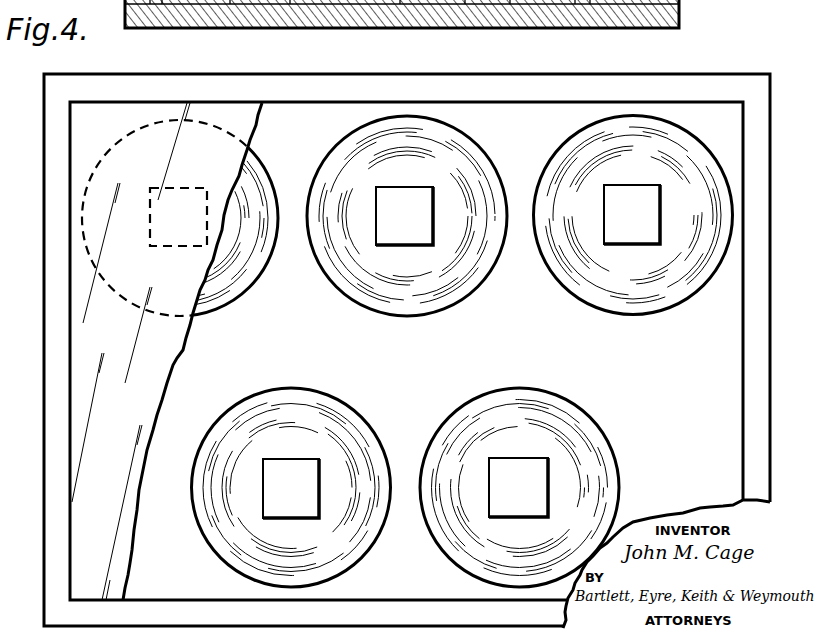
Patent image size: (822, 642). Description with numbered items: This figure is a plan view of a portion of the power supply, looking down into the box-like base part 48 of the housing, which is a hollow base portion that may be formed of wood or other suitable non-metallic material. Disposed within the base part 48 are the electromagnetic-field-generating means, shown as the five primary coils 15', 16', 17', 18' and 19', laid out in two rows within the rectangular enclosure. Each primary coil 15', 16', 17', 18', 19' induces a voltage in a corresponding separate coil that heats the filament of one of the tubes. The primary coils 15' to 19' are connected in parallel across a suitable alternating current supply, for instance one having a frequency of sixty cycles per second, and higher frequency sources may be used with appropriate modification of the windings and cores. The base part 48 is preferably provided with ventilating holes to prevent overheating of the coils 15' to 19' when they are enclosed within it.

The box-like base part 48 is at (720, 72).
The primary coil 15' is at (633, 226).
The primary coil 16' is at (544, 487).
The primary coil 17' is at (407, 220).
The primary coil 18' is at (291, 478).
The primary coil 19' is at (180, 221).